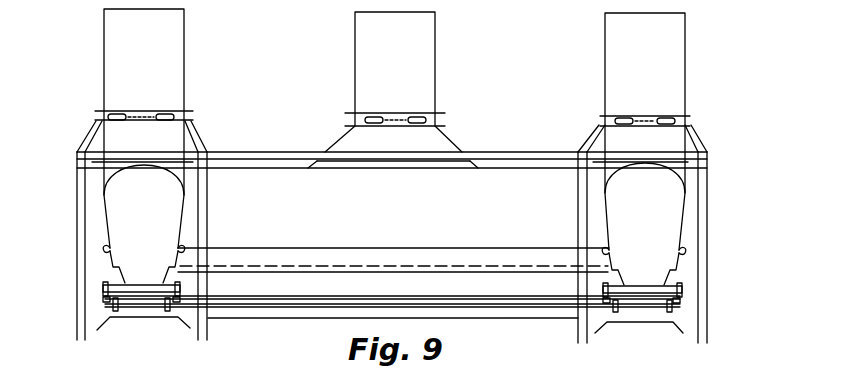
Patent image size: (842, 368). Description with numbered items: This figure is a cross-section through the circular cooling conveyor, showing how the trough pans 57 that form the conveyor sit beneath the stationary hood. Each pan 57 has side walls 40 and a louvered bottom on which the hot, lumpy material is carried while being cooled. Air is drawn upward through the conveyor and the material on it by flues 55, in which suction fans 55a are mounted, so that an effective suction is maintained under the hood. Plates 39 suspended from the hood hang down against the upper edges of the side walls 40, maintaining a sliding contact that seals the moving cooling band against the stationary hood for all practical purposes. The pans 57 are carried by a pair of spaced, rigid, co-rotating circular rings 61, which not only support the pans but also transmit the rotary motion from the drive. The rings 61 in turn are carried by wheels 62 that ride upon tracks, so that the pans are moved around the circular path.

The flue 55 is at (173, 43).
The suction fan 55a is at (175, 118).
The plate 39 is at (175, 255).
The side wall 40 is at (170, 277).
The trough pan 57 is at (125, 283).
The circular ring 61 is at (103, 300).
The wheel 62 is at (115, 305).